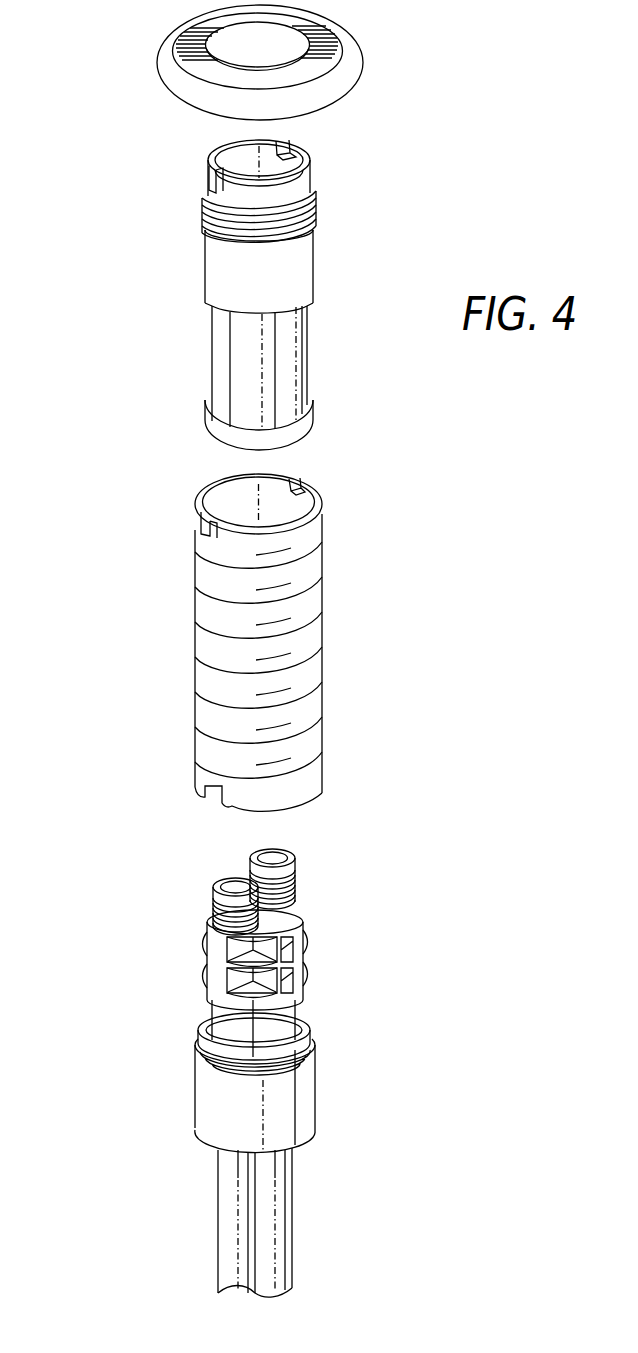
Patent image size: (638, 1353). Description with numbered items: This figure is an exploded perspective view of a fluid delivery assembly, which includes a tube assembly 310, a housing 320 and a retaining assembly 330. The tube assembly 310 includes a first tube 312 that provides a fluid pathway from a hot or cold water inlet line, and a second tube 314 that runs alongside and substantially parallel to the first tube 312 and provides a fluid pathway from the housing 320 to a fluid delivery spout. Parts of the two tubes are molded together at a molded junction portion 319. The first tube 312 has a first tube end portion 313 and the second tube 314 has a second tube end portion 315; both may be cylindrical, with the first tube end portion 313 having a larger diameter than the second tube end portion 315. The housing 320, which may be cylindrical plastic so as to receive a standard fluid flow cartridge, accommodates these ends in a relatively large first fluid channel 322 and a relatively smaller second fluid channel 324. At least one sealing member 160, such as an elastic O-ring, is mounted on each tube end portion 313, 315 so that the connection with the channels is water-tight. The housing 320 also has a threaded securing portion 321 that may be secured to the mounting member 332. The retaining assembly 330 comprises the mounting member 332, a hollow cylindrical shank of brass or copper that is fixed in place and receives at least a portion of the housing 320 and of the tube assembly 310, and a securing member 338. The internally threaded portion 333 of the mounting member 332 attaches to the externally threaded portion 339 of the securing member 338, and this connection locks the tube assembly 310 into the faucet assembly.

The housing 320 is at (259, 295).
The threaded securing portion 321 is at (312, 190).
The first fluid channel 322 is at (288, 352).
The second fluid channel 324 is at (256, 375).
The mounting member 332 is at (284, 632).
The internally threaded portion 333 is at (220, 496).
The retaining assembly 330 is at (121, 773).
The tube assembly 310 is at (272, 927).
The first tube end portion 313 is at (296, 868).
The second tube end portion 315 is at (233, 885).
The sealing member 160 is at (293, 892).
The molded junction portion 319 is at (303, 918).
The externally threaded portion 339 is at (308, 1040).
The securing member 338 is at (297, 1107).
The second tube 314 is at (228, 1220).
The first tube 312 is at (280, 1262).